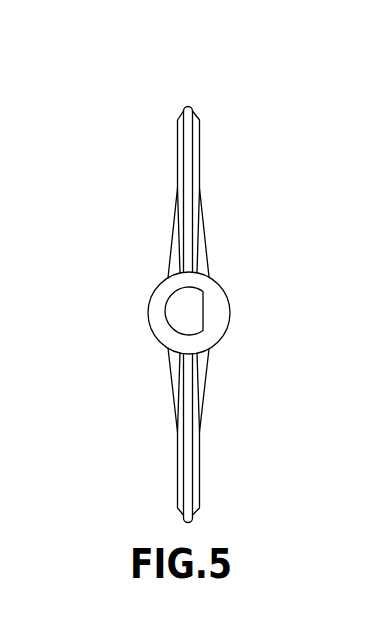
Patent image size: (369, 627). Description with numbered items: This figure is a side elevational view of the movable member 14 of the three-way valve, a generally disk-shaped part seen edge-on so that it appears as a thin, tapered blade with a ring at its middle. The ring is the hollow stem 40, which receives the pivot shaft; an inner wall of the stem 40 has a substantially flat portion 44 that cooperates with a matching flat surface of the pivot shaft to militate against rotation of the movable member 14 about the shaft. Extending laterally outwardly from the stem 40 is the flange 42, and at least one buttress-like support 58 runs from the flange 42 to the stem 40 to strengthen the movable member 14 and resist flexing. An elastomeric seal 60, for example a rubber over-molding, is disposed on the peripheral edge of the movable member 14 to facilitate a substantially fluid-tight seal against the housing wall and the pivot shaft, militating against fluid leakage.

The movable member 14 is at (126, 116).
The hollow stem 40 is at (222, 284).
The flange 42 is at (178, 477).
The substantially flat portion 44 is at (203, 314).
The buttress-like support 58 is at (177, 262).
The elastomeric seal 60 is at (189, 105).